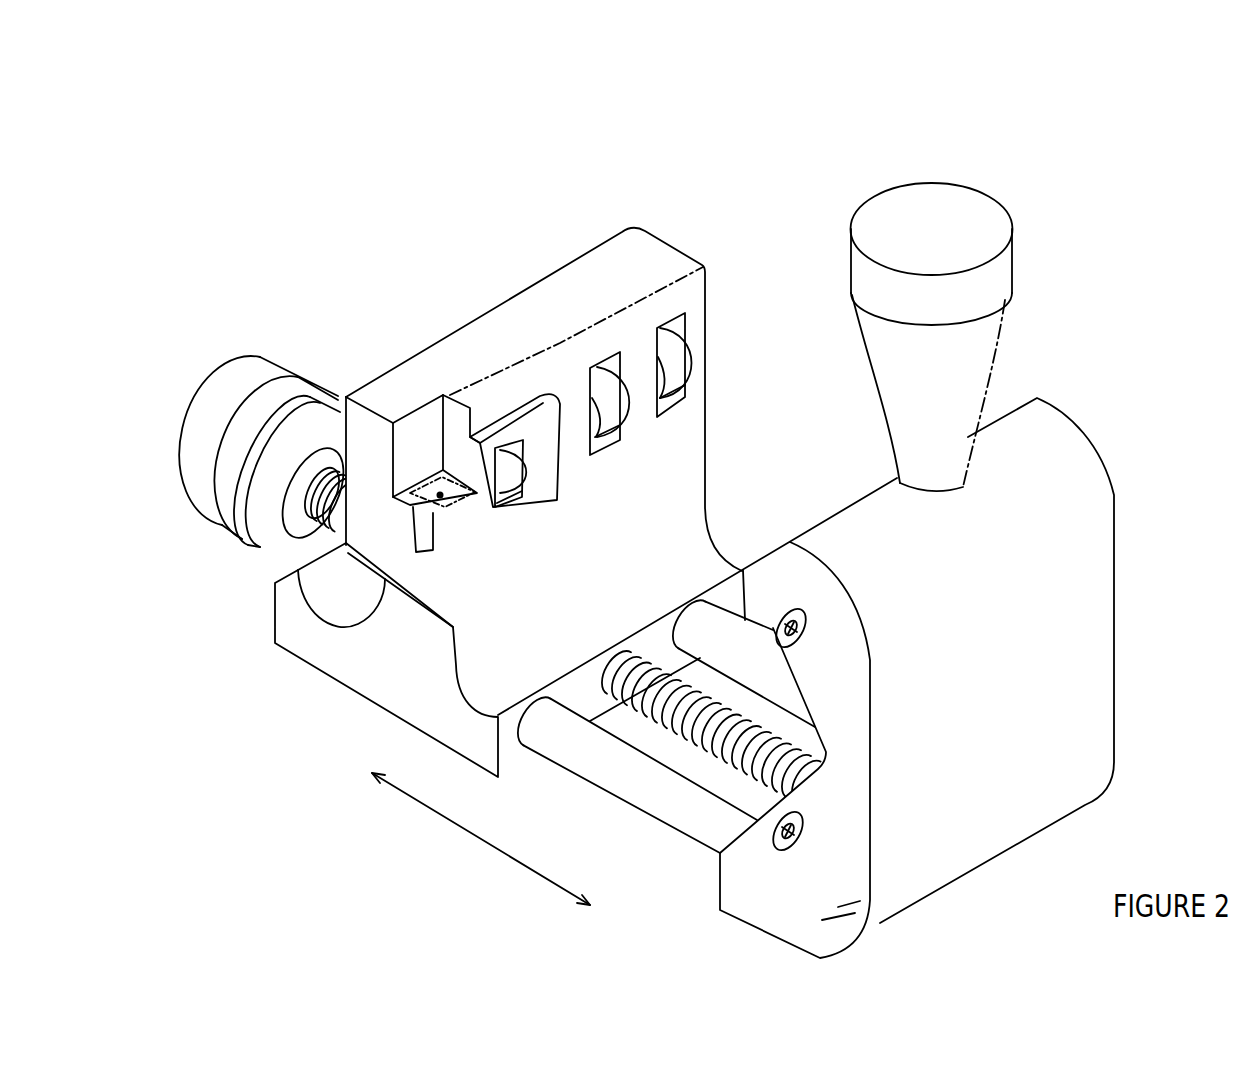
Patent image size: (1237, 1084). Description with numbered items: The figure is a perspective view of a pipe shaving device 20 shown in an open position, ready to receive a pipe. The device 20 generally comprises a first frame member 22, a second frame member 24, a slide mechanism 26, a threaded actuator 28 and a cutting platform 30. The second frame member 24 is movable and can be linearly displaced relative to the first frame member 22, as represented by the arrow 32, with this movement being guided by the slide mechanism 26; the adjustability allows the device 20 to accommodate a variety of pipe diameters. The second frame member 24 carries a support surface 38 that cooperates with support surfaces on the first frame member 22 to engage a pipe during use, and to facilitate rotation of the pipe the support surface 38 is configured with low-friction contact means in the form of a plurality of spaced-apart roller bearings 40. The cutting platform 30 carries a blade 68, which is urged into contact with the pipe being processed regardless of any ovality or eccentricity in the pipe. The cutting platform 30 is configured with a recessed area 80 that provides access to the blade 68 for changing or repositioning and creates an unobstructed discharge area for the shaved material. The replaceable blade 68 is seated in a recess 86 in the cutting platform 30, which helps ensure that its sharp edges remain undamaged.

The pipe shaving device 20 is at (739, 153).
The first frame member 22 is at (993, 663).
The second frame member 24 is at (565, 586).
The slide mechanism 26 is at (539, 765).
The threaded actuator 28 is at (330, 505).
The cutting platform 30 is at (538, 427).
The arrow 32 is at (478, 838).
The support surface 38 is at (640, 387).
The roller bearings 40 is at (675, 357).
The blade 68 is at (458, 497).
The recessed area 80 is at (425, 448).
The recess 86 is at (440, 518).